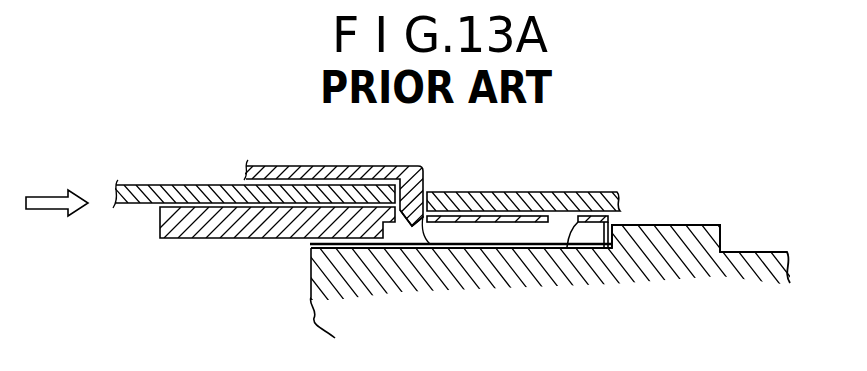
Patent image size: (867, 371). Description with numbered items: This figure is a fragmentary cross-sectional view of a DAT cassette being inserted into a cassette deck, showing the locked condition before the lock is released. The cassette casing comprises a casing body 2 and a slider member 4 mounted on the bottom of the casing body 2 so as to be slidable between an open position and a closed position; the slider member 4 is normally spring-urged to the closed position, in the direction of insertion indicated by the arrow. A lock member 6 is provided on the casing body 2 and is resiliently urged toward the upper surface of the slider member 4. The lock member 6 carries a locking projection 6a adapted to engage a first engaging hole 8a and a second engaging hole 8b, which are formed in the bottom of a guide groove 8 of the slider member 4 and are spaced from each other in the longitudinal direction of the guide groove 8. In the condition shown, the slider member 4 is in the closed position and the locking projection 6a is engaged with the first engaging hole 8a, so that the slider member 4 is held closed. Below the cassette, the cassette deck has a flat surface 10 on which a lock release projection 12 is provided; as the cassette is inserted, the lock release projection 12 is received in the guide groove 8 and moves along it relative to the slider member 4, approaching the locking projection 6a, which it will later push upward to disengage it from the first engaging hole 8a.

The casing body 2 is at (128, 209).
The slider member 4 is at (222, 226).
The lock member 6 is at (330, 166).
The locking projection 6a is at (398, 229).
The guide groove 8 is at (524, 234).
The first engaging hole 8a is at (424, 219).
The second engaging hole 8b is at (569, 240).
The flat surface 10 is at (772, 252).
The lock release projection 12 is at (683, 225).